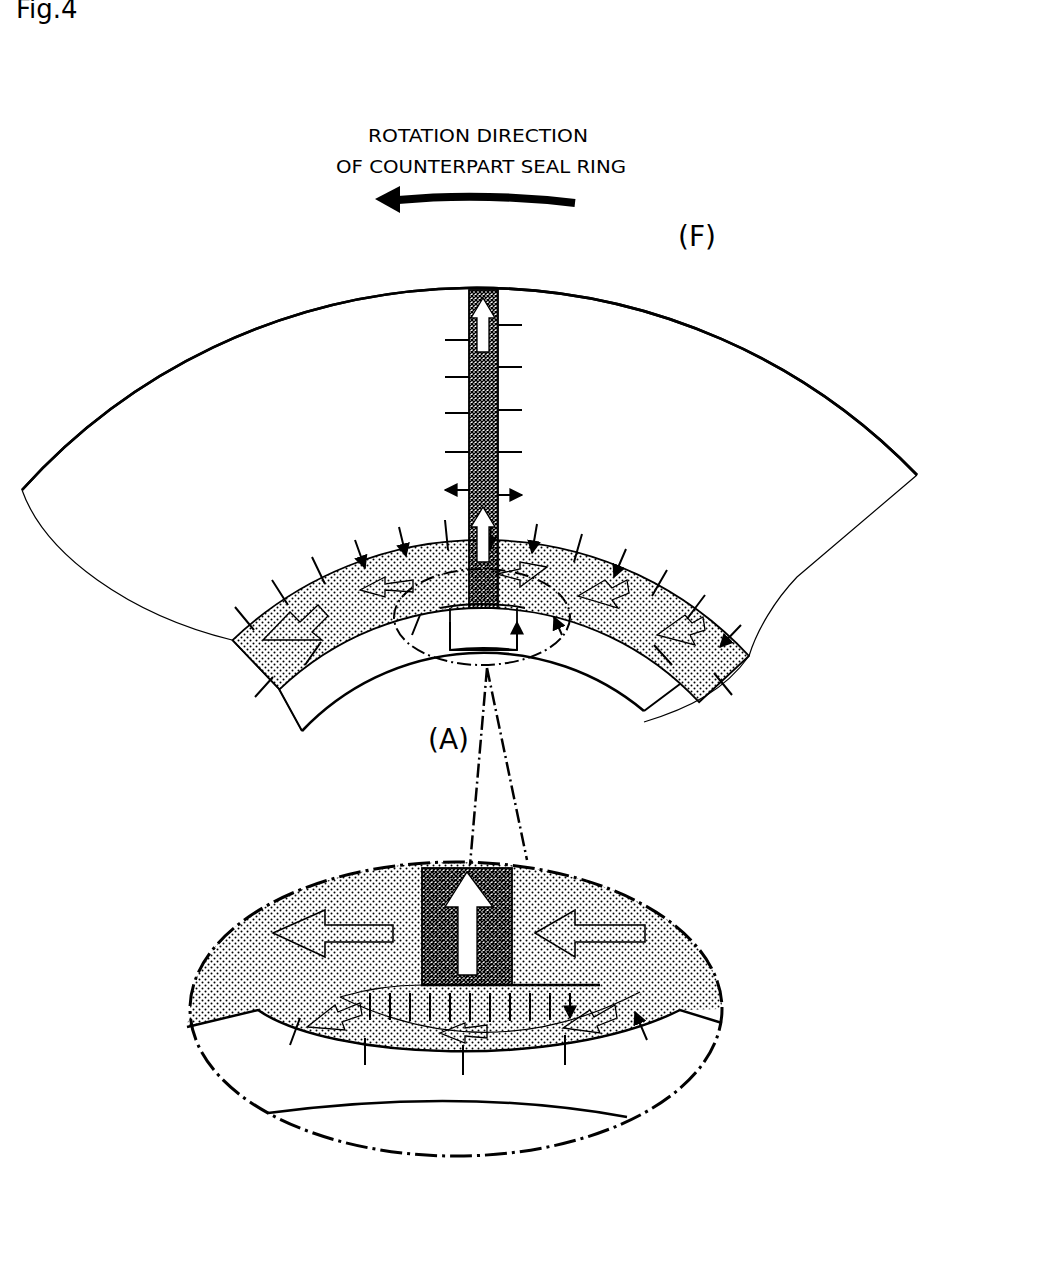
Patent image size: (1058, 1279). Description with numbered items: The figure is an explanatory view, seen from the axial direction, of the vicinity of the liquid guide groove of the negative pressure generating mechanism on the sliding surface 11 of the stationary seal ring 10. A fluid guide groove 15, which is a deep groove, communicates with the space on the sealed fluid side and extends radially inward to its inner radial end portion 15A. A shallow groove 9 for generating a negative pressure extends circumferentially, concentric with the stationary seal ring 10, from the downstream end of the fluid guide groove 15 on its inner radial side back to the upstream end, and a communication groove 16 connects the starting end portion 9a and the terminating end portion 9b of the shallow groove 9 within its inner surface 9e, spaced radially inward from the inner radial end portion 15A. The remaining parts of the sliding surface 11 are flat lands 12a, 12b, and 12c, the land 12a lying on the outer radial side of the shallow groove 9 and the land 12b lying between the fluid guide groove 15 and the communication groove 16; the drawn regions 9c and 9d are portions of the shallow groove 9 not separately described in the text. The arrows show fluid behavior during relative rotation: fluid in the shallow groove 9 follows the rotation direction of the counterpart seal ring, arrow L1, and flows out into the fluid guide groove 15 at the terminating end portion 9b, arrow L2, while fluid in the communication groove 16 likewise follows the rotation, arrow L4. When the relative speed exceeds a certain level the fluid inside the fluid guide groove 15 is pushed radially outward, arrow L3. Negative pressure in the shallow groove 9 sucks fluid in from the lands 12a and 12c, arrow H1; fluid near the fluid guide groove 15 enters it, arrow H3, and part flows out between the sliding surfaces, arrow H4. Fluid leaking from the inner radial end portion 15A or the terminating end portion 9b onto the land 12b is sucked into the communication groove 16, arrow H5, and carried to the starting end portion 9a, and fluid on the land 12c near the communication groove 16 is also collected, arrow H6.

The stationary seal ring 10 is at (808, 328).
The sliding surface 11 is at (815, 428).
The land 12a is at (730, 388).
The land 12b is at (510, 930).
The land 12c is at (590, 698).
The fluid guide groove 15 is at (485, 292).
The inner radial end portion 15A is at (437, 927).
The communication groove 16 is at (396, 1050).
The shallow groove 9 is at (590, 530).
The starting end portion 9a is at (446, 528).
The terminating end portion 9b is at (505, 535).
The land outer region 9c is at (745, 665).
The land region 9d is at (613, 560).
The inner surface 9e is at (318, 688).
The arrow H1 is at (290, 592).
The arrow H3 is at (512, 372).
The arrow H4 is at (458, 340).
The arrow H5 is at (592, 1003).
The arrow H6 is at (400, 1048).
The arrow L1 is at (418, 622).
The arrow L2 is at (550, 635).
The arrow L3 is at (503, 330).
The arrow L4 is at (480, 1065).